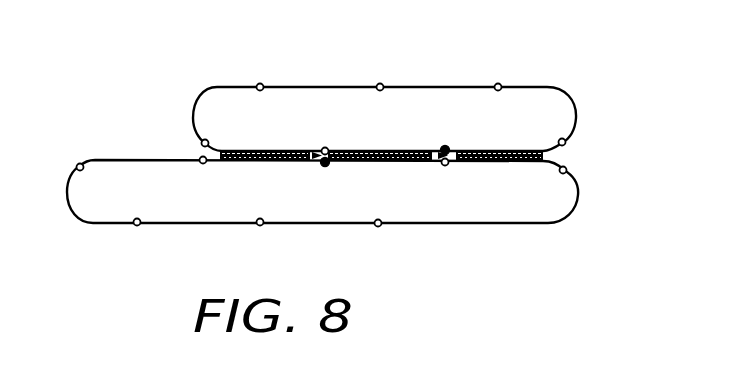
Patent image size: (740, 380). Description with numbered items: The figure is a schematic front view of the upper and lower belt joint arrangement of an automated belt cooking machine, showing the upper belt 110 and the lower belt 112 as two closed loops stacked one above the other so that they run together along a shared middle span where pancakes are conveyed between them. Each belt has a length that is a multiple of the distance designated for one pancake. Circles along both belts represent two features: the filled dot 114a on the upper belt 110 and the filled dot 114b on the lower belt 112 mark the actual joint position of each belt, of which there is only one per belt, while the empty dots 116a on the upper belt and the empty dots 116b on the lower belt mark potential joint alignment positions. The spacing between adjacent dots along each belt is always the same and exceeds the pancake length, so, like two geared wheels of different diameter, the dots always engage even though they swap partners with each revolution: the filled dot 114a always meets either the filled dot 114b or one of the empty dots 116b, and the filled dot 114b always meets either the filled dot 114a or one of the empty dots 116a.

The upper belt 110 is at (300, 86).
The lower belt 112 is at (465, 225).
The filled dot of the upper belt 114a is at (446, 150).
The filled dot of the lower belt 114b is at (325, 163).
The empty dots of the upper belt 116a is at (500, 85).
The empty dots of the lower belt 116b is at (138, 225).